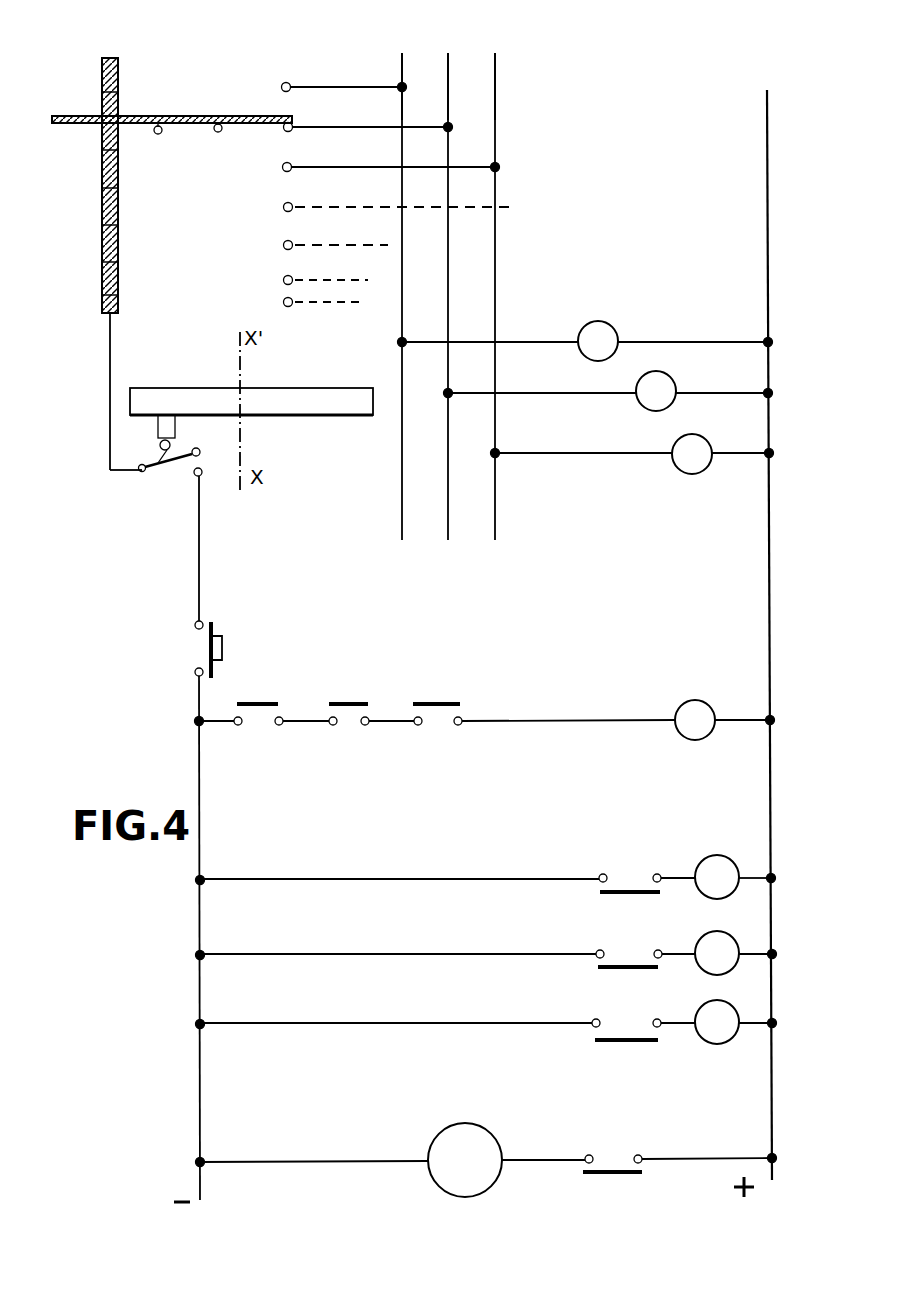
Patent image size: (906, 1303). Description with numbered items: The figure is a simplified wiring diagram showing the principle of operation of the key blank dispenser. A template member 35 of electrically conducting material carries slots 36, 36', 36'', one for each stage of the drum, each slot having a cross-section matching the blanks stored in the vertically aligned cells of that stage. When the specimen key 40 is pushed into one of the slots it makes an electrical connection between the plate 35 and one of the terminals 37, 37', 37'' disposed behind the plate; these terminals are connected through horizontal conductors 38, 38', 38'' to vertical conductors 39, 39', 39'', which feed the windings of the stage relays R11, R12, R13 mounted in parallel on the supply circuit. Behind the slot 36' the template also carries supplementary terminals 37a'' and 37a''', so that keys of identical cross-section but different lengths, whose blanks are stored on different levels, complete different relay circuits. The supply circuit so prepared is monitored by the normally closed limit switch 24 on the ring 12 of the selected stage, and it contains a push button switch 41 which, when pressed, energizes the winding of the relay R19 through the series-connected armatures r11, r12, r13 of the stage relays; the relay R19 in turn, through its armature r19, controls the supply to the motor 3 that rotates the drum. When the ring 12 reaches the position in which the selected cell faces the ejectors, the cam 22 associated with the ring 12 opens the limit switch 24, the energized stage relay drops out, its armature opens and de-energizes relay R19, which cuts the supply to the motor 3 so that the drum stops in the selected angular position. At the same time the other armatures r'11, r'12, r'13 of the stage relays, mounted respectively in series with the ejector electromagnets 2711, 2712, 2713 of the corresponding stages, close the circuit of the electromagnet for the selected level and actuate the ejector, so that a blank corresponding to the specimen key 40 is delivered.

The motor 3 is at (474, 1130).
The ring 12 is at (336, 398).
The cam 22 is at (172, 428).
The limit switch 24 is at (164, 470).
The template member 35 is at (106, 58).
The slot 36 is at (136, 257).
The slot 36' is at (88, 83).
The slot 36'' is at (83, 176).
The terminal 37 is at (274, 61).
The terminal 37' is at (267, 143).
The terminal 37'' is at (265, 180).
The supplementary terminal 37a'' is at (157, 150).
The supplementary terminal 37a''' is at (215, 150).
The horizontal conductor 38 is at (349, 66).
The horizontal conductor 38' is at (372, 108).
The horizontal conductor 38'' is at (396, 148).
The vertical conductor 39 is at (417, 73).
The vertical conductor 39' is at (469, 72).
The vertical conductor 39'' is at (520, 69).
The specimen key 40 is at (62, 124).
The push button switch 41 is at (222, 642).
The stage relay R11 is at (604, 330).
The stage relay R12 is at (664, 382).
The stage relay R13 is at (700, 444).
The motor relay R19 is at (700, 710).
The armature of relay R11 r11 is at (259, 703).
The armature of relay R12 r12 is at (346, 703).
The armature of relay R13 r13 is at (436, 703).
The armature of relay R11 r'11 is at (630, 861).
The armature of relay R12 r'12 is at (629, 939).
The armature of relay R13 r'13 is at (626, 1011).
The armature of relay R19 r19 is at (612, 1166).
The ejector electromagnet 2711 is at (718, 858).
The ejector electromagnet 2712 is at (720, 942).
The ejector electromagnet 2713 is at (718, 1012).